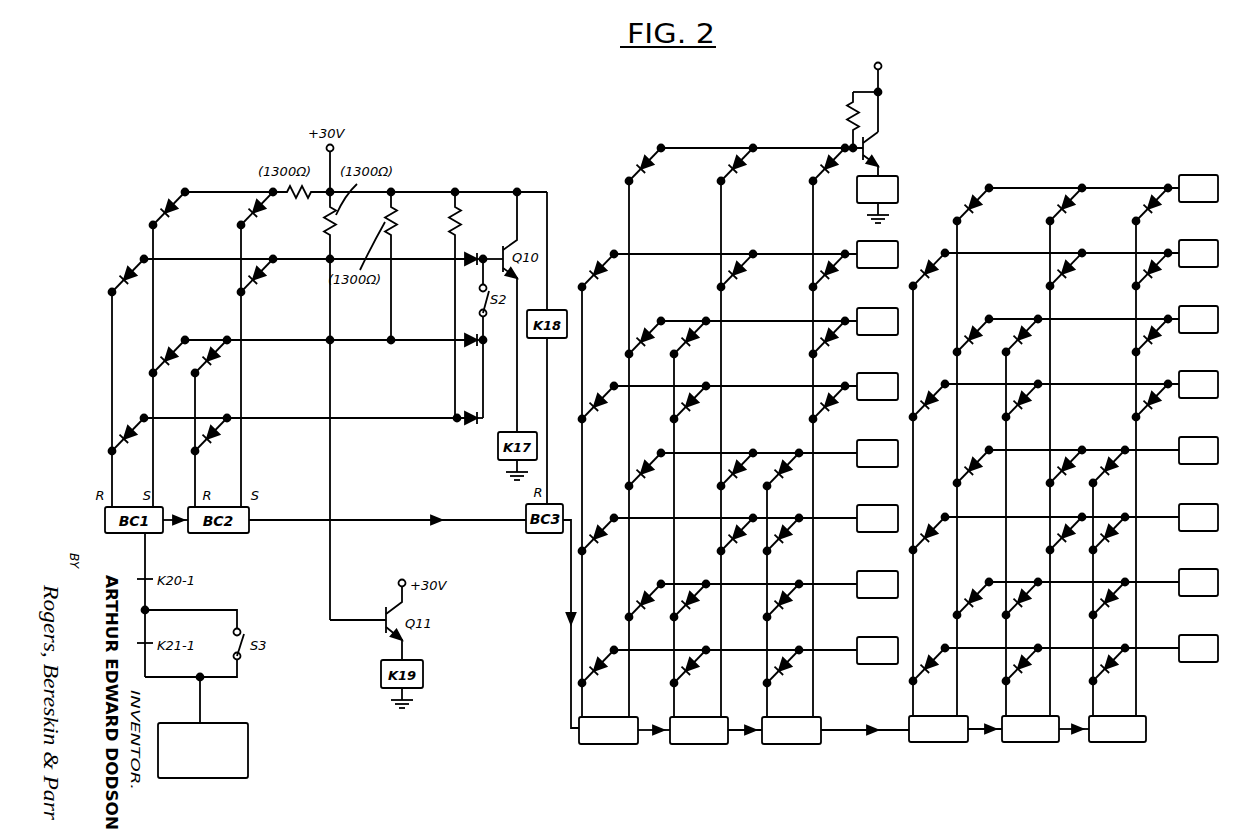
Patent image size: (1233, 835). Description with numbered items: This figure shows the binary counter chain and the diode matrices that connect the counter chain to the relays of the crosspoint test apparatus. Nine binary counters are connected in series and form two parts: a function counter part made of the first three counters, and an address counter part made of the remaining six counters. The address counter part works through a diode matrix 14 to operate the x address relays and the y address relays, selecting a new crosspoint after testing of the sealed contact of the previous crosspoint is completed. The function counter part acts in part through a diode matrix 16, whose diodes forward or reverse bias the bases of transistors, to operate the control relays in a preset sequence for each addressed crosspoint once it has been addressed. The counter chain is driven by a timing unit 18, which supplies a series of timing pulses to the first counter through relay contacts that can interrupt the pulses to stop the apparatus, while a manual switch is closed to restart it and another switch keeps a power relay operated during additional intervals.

The diode matrix 14 is at (749, 104).
The diode matrix 16 is at (136, 152).
The timing unit 18 is at (248, 750).